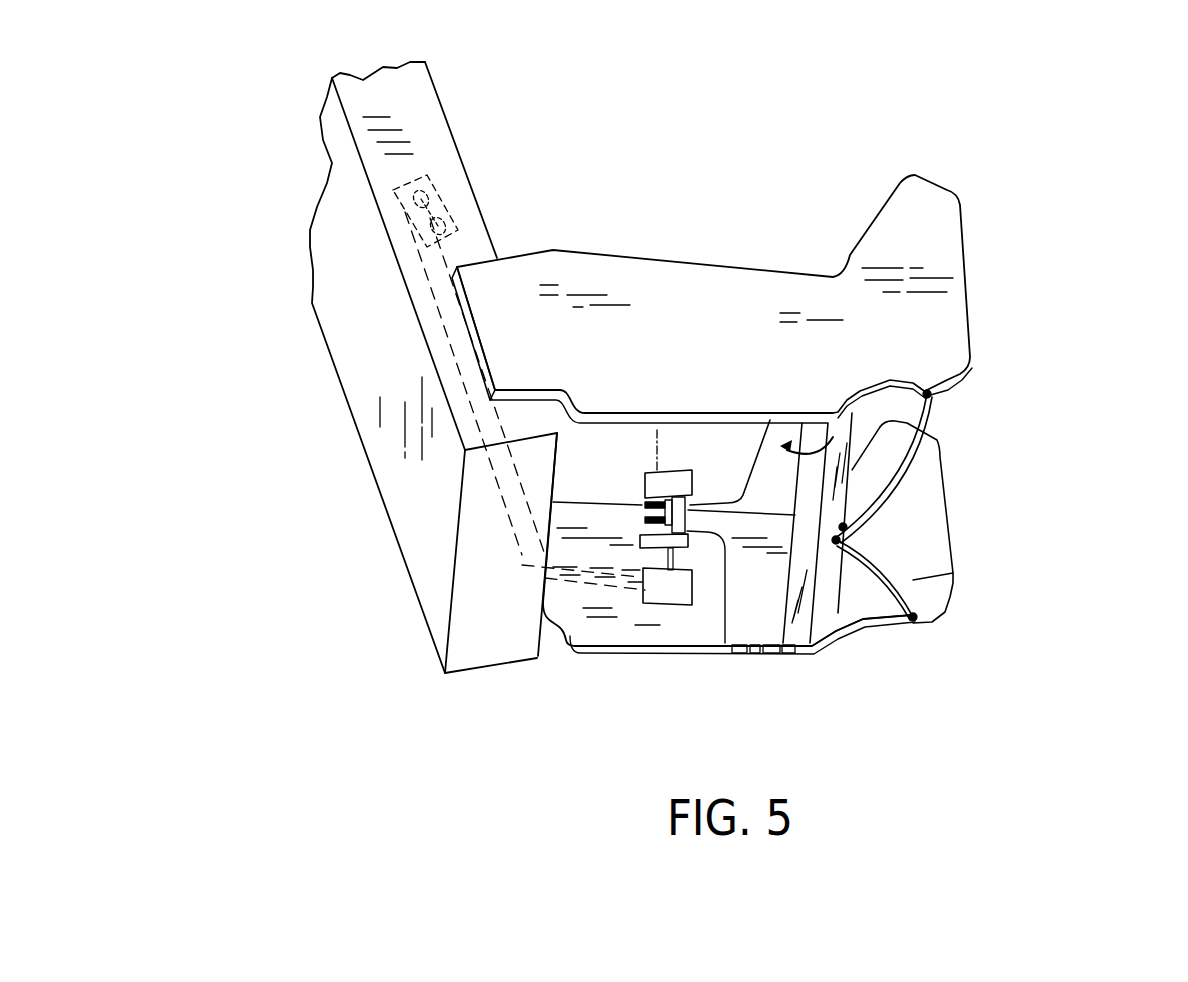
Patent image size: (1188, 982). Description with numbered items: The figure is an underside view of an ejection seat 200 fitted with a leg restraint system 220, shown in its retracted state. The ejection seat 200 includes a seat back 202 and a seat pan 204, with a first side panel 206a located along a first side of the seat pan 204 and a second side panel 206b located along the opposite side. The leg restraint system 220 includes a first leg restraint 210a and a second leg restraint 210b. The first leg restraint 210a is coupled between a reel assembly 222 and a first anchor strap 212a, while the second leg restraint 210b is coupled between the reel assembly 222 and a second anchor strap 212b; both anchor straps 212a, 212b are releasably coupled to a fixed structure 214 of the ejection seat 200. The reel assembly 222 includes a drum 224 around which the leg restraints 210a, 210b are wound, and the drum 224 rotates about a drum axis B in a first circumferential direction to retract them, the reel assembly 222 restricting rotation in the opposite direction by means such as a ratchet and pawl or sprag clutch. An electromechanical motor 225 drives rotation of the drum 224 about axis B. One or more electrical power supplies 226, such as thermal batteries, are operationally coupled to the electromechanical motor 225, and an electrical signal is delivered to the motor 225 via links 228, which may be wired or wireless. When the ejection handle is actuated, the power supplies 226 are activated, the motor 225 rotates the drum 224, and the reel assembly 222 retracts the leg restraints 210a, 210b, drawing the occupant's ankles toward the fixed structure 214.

The ejection seat 200 is at (276, 126).
The seat back 202 is at (337, 337).
The seat pan 204 is at (838, 410).
The first side panel 206a is at (752, 293).
The second side panel 206b is at (607, 630).
The first leg restraint 210a is at (748, 440).
The second leg restraint 210b is at (868, 623).
The first anchor strap 212a is at (923, 415).
The second anchor strap 212b is at (913, 583).
The fixed structure 214 is at (823, 573).
The leg restraint system 220 is at (1026, 405).
The reel assembly 222 is at (673, 464).
The drum 224 is at (647, 508).
The electromechanical motor 225 is at (672, 592).
The electrical power supply 226 is at (450, 197).
The links 228 is at (502, 518).
The drum axis B is at (663, 463).